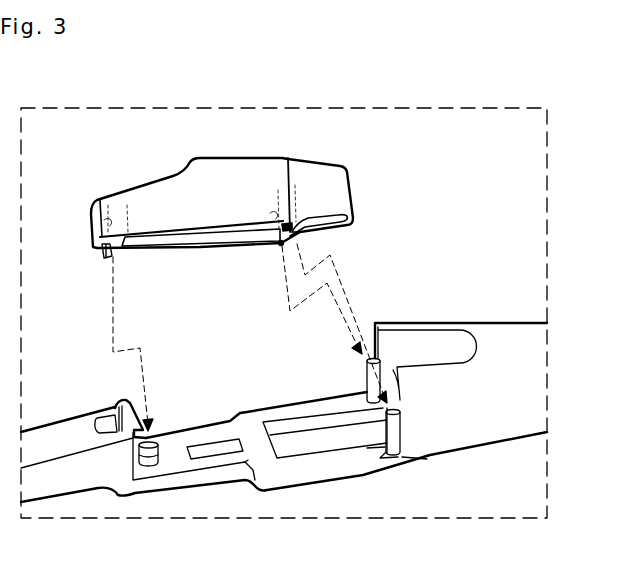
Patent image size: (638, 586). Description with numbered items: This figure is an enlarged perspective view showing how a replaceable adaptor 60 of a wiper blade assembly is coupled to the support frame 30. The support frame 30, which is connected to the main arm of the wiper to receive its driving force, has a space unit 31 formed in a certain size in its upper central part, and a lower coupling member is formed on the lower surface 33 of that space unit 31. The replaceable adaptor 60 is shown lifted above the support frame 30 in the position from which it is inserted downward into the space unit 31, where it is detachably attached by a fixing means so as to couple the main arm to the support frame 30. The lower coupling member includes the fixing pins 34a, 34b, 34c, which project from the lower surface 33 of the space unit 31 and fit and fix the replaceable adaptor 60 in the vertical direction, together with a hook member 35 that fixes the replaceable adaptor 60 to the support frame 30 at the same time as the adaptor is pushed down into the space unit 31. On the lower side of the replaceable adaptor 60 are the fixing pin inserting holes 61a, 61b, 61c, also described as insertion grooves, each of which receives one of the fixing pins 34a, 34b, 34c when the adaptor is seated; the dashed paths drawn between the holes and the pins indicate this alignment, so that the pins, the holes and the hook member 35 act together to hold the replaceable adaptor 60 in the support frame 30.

The replaceable adaptor 60 is at (325, 172).
The support frame 30 is at (528, 347).
The space unit 31 is at (201, 408).
The lower surface 33 is at (253, 420).
The hook member 35 is at (127, 403).
The fixing pin 34a is at (151, 441).
The fixing pin 34b is at (367, 373).
The fixing pin 34c is at (390, 453).
The fixing pin inserting hole 61a is at (113, 253).
The fixing pin inserting hole 61b is at (280, 243).
The fixing pin inserting hole 61c is at (303, 233).